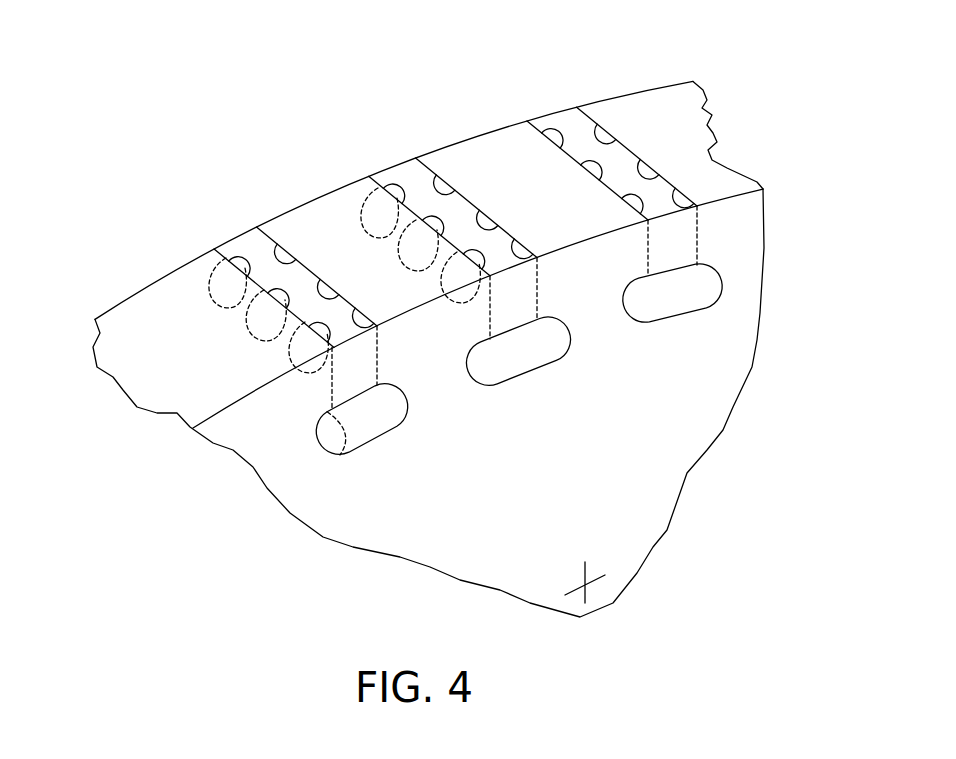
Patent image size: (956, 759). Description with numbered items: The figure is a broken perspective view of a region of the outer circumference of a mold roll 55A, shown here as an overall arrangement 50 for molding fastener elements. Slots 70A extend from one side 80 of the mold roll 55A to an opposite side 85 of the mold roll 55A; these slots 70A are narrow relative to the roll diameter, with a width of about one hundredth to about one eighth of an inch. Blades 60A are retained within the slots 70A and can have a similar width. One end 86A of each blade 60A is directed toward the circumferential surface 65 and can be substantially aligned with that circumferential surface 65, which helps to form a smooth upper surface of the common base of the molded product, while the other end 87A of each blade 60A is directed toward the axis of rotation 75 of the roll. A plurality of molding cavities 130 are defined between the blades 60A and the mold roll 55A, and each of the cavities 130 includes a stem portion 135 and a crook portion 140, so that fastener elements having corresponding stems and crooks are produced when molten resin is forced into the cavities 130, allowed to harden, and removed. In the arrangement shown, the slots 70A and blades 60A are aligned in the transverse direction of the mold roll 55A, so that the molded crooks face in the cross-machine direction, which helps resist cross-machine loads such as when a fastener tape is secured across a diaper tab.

The assembly 50 is at (262, 143).
The opposite side 85 is at (607, 100).
The circumferential surface 65 is at (510, 158).
The blade 60A is at (682, 245).
The slot 70A is at (540, 348).
The end 87A is at (333, 458).
The end 86A is at (310, 310).
The one side 80 is at (638, 460).
The axis of rotation 75 is at (585, 585).
The mold roll 55A is at (400, 505).
The molding cavity 130 is at (397, 215).
The stem portion 135 is at (372, 199).
The crook portion 140 is at (405, 233).